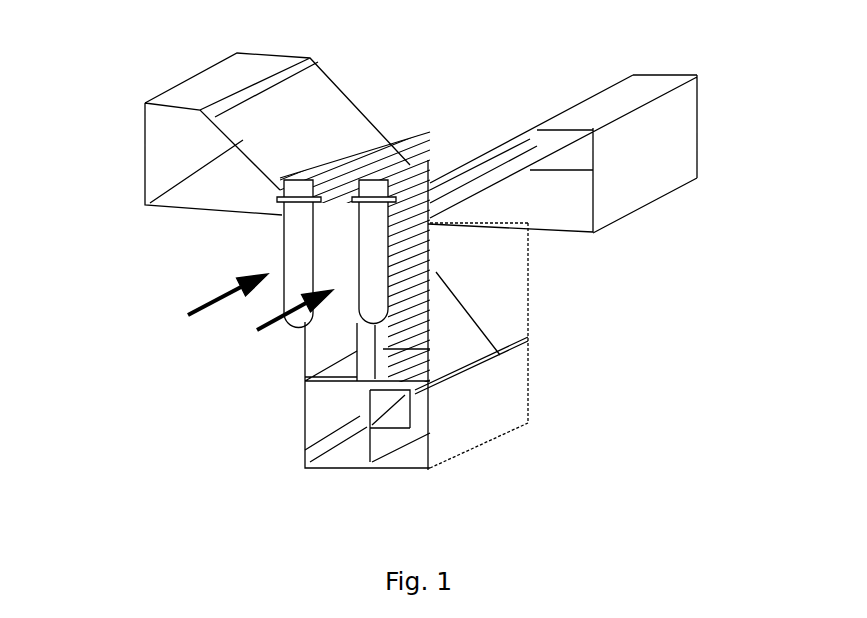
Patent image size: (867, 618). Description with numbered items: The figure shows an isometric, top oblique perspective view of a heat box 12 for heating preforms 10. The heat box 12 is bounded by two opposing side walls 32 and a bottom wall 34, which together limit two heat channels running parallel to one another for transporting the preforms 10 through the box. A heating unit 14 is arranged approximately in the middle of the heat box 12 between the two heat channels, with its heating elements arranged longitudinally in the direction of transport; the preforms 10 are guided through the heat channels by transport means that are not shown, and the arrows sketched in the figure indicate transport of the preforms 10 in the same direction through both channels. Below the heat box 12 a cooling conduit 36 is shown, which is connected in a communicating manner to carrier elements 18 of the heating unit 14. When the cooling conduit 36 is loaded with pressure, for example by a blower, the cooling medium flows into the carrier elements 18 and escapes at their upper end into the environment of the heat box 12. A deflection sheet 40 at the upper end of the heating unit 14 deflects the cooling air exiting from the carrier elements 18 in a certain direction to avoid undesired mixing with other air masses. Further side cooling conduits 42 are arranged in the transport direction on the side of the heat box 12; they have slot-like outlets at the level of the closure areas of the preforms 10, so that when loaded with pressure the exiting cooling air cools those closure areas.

The preform 10 is at (516, 363).
The heat box 12 is at (612, 318).
The heating unit 14 is at (458, 144).
The carrier element 18 is at (445, 364).
The side wall 32 is at (298, 348).
The bottom wall 34 is at (470, 335).
The cooling conduit 36 is at (516, 372).
The deflection sheet 40 is at (418, 162).
The side cooling conduit 42 is at (148, 162).